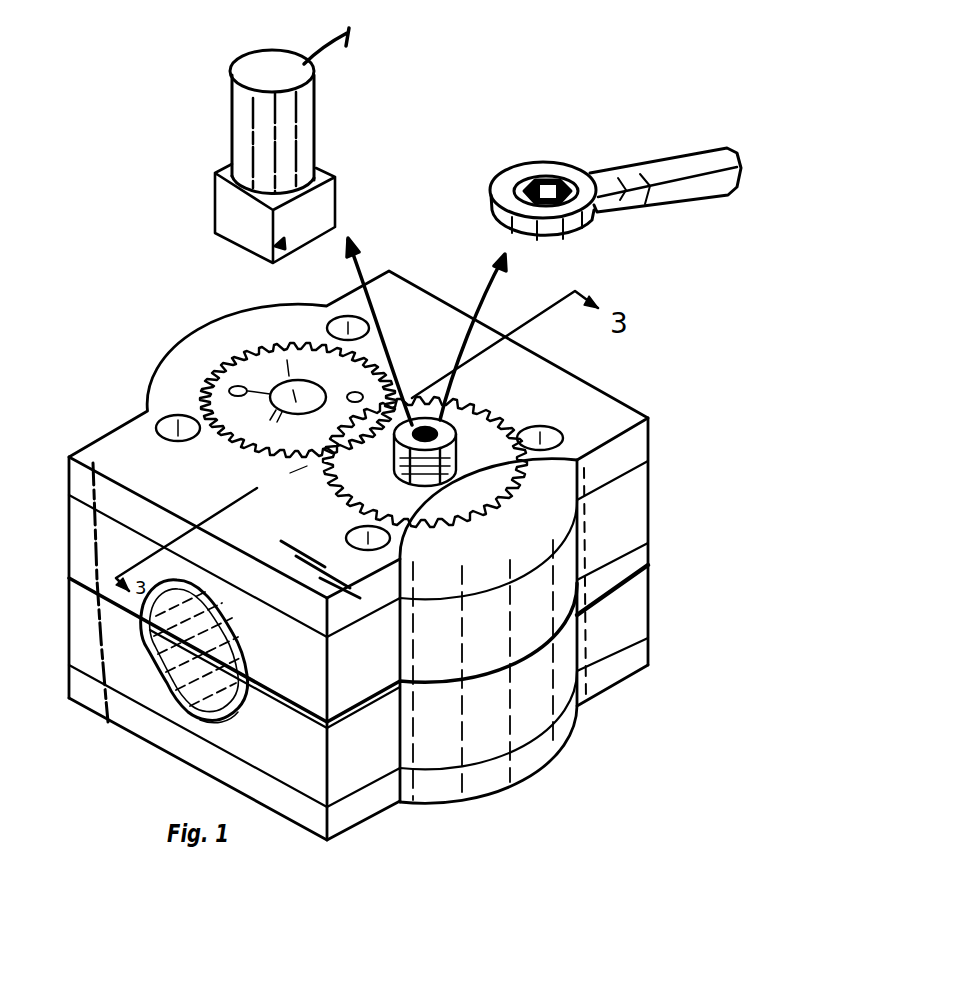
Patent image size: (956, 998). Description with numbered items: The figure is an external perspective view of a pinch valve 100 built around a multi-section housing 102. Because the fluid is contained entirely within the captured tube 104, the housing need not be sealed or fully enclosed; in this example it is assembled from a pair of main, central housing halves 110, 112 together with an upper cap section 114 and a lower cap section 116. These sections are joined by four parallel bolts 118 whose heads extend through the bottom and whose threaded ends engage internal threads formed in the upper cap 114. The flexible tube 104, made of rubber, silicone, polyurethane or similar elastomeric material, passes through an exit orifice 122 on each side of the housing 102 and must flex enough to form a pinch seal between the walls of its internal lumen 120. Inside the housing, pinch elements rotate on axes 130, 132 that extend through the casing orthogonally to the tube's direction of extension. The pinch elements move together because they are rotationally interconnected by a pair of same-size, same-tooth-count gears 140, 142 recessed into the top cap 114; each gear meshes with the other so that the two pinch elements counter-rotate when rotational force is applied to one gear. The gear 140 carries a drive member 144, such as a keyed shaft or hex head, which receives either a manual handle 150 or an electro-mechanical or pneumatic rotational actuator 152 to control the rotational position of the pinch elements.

The pinch valve 100 is at (522, 106).
The multi-section housing 102 is at (648, 412).
The tube 104 is at (243, 712).
The central housing half 110 is at (650, 510).
The central housing half 112 is at (650, 585).
The upper cap section 114 is at (648, 448).
The lower cap section 116 is at (648, 652).
The bolts 118 is at (334, 318).
The internal lumen 120 is at (197, 657).
The exit orifice 122 is at (248, 645).
The axis 130 is at (272, 340).
The axis 132 is at (423, 358).
The gear 140 is at (466, 458).
The gear 142 is at (200, 400).
The drive member 144 is at (470, 383).
The handle 150 is at (658, 163).
The rotational actuator 152 is at (322, 206).